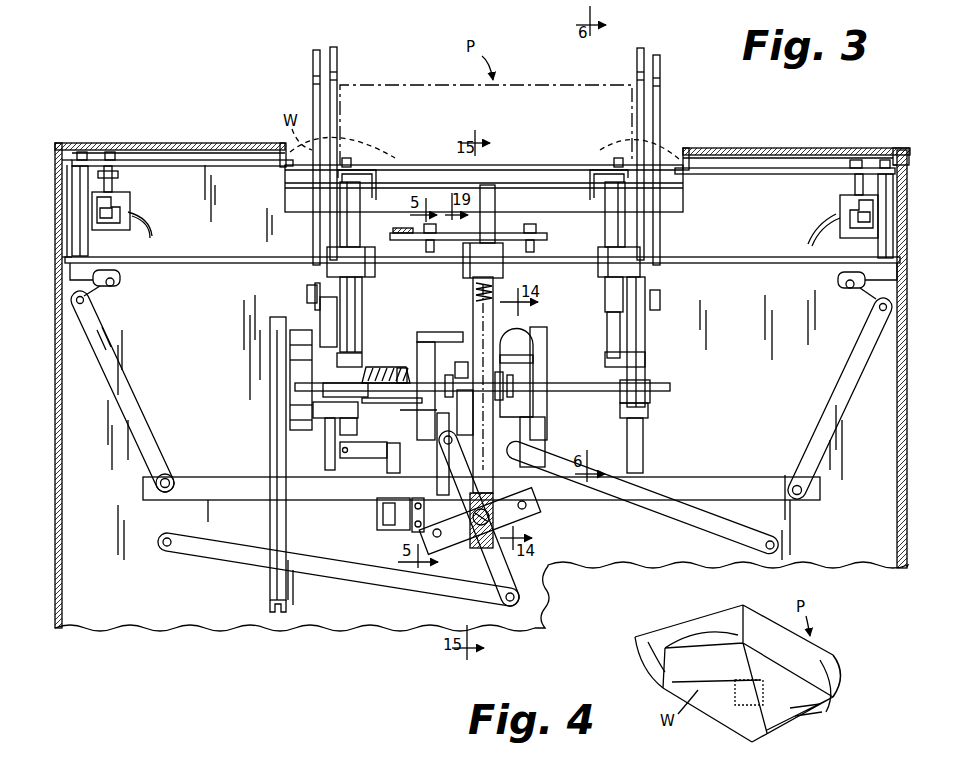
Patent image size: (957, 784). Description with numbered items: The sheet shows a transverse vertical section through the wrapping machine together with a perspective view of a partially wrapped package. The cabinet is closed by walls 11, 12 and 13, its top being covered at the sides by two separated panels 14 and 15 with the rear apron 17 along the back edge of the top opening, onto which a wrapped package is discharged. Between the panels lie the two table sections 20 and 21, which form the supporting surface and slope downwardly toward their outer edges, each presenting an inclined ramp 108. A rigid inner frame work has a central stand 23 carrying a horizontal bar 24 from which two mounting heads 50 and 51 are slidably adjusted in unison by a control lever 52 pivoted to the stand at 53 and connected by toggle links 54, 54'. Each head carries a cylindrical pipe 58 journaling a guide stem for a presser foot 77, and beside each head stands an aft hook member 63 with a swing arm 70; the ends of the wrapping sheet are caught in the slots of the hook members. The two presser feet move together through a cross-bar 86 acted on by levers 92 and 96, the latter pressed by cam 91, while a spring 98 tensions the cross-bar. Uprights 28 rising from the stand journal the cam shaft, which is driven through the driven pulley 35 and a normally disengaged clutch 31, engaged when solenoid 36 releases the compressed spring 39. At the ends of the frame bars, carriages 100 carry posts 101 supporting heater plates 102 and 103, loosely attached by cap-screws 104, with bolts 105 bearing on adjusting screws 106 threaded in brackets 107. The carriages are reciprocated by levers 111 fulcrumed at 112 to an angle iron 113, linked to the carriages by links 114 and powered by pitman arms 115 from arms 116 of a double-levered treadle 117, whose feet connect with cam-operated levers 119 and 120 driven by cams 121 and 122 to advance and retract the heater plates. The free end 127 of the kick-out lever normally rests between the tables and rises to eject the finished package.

The back wall 11 is at (338, 617).
The side wall 12 is at (55, 406).
The side wall 13 is at (907, 398).
The panel 14 is at (208, 143).
The panel 15 is at (758, 148).
The rear apron 17 is at (678, 202).
The table section 20 is at (372, 170).
The table section 21 is at (598, 170).
The stand 23 is at (478, 310).
The horizontal bar 24 is at (222, 263).
The uprights 28 is at (419, 349).
The clutch 31 is at (300, 326).
The driven pulley 35 is at (270, 438).
The solenoid 36 is at (392, 508).
The spring 39 is at (388, 362).
The mounting head 50 is at (362, 277).
The mounting head 51 is at (602, 277).
The control lever 52 is at (500, 243).
The pivot 53 is at (466, 234).
The toggle link 54 is at (411, 241).
The toggle link 54' is at (549, 241).
The cylindrical pipe 58 is at (360, 222).
The aft hook member 63 is at (337, 60).
The swing arm 70 is at (313, 64).
The presser foot 77 is at (360, 345).
The cross-bar 86 is at (660, 389).
The cam 91 is at (462, 365).
The lever 92 is at (512, 341).
The lever 96 is at (462, 403).
The spring 98 is at (476, 289).
The carriage 100 is at (100, 250).
The post 101 is at (72, 206).
The heater plate 102 is at (182, 166).
The heater plate 103 is at (752, 174).
The cap-screw 104 is at (84, 152).
The bolt 105 is at (112, 152).
The adjusting screw 106 is at (118, 194).
The bracket 107 is at (124, 210).
The inclined ramp 108 is at (348, 158).
The lever 111 is at (118, 387).
The fulcrum 112 is at (168, 480).
The angle iron 113 is at (708, 486).
The link 114 is at (100, 290).
The pitman arm 115 is at (224, 553).
The arm 116 is at (500, 563).
The double-levered treadle 117 is at (536, 506).
The cam-operated lever 119 is at (434, 414).
The cam-operated lever 120 is at (538, 416).
The cam 121 is at (446, 338).
The cam 122 is at (533, 359).
The free end 127 is at (495, 192).